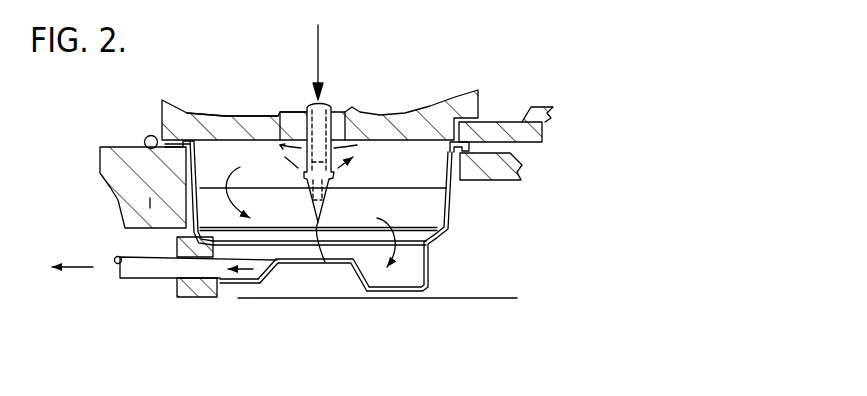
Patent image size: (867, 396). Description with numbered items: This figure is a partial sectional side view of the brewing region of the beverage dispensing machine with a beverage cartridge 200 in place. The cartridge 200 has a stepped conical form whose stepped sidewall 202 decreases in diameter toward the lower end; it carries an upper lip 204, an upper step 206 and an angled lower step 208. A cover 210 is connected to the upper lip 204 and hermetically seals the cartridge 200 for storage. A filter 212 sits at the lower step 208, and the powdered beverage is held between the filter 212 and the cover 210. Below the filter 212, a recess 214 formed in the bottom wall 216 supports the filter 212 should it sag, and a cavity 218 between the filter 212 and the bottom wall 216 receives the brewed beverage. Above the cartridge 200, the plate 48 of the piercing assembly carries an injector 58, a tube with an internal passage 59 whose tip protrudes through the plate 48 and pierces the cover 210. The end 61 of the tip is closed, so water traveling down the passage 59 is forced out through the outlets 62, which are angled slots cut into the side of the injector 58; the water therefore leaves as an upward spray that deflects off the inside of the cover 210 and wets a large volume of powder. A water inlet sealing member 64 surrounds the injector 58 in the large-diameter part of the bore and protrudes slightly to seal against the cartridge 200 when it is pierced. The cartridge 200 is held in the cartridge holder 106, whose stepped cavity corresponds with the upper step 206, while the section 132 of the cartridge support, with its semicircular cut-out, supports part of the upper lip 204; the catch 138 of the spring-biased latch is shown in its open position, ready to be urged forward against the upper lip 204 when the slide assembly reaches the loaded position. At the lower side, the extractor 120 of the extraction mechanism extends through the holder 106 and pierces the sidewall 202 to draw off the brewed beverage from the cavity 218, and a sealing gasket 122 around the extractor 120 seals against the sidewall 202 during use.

The plate 48 is at (413, 110).
The injector 58 is at (332, 110).
The passage 59 is at (305, 112).
The end 61 is at (377, 282).
The outlets 62 is at (328, 183).
The water inlet sealing member 64 is at (283, 113).
The cartridge holder 106 is at (150, 203).
The extractor 120 is at (123, 280).
The sealing gasket 122 is at (192, 297).
The section 132 is at (490, 172).
The catch 138 is at (546, 121).
The beverage cartridge 200 is at (430, 157).
The stepped sidewall 202 is at (430, 268).
The upper lip 204 is at (162, 128).
The upper step 206 is at (195, 190).
The angled lower step 208 is at (242, 230).
The cover 210 is at (250, 114).
The filter 212 is at (336, 231).
The recess 214 is at (290, 250).
The bottom wall 216 is at (230, 283).
The cavity 218 is at (405, 272).